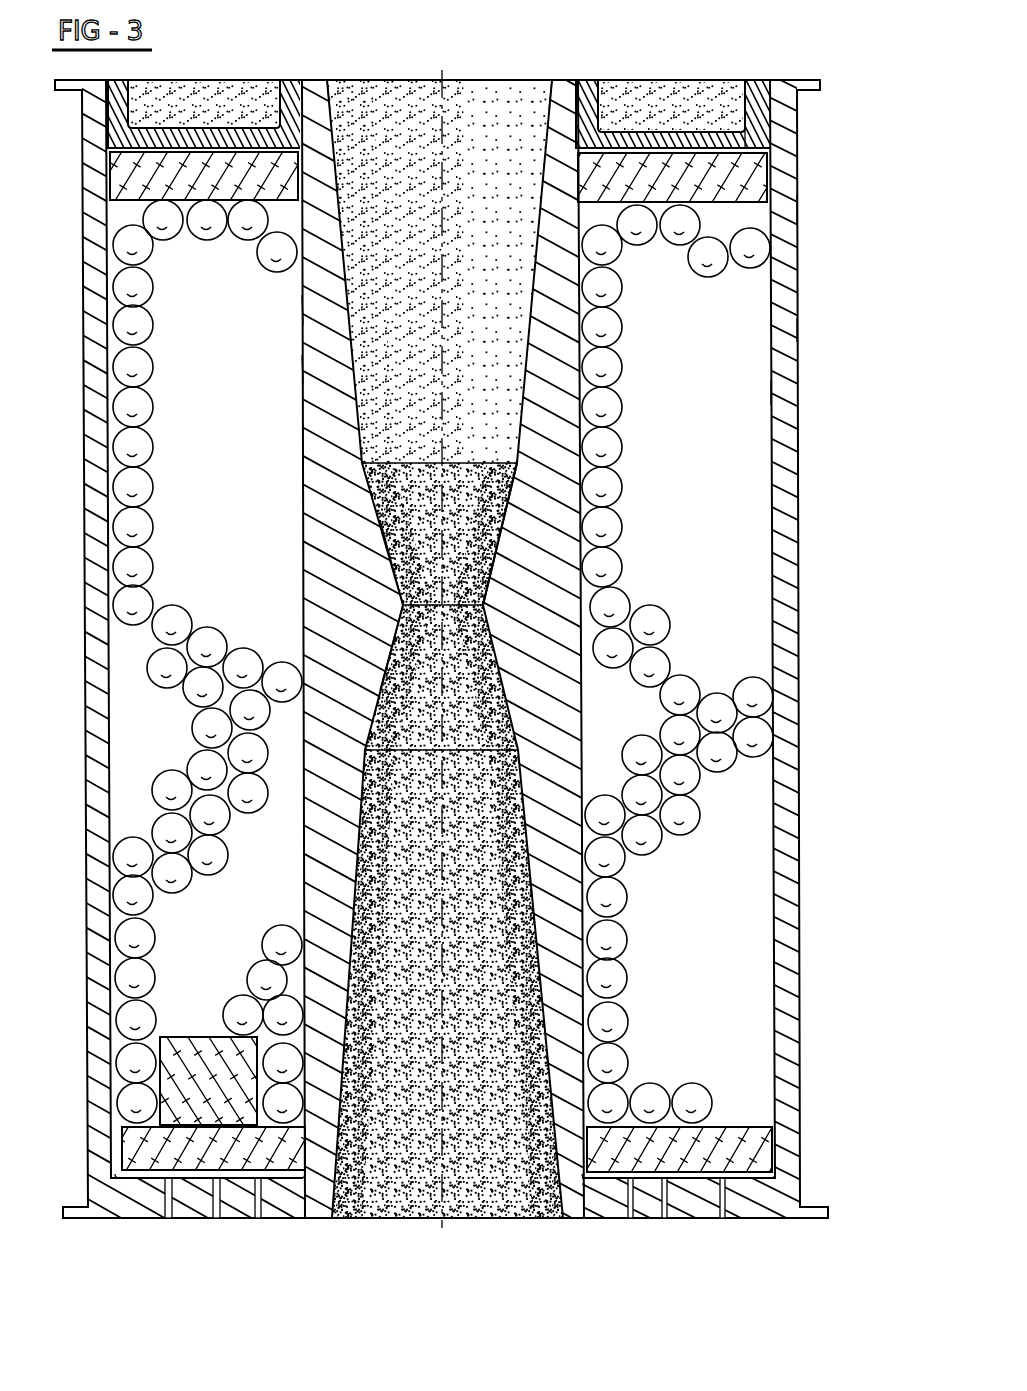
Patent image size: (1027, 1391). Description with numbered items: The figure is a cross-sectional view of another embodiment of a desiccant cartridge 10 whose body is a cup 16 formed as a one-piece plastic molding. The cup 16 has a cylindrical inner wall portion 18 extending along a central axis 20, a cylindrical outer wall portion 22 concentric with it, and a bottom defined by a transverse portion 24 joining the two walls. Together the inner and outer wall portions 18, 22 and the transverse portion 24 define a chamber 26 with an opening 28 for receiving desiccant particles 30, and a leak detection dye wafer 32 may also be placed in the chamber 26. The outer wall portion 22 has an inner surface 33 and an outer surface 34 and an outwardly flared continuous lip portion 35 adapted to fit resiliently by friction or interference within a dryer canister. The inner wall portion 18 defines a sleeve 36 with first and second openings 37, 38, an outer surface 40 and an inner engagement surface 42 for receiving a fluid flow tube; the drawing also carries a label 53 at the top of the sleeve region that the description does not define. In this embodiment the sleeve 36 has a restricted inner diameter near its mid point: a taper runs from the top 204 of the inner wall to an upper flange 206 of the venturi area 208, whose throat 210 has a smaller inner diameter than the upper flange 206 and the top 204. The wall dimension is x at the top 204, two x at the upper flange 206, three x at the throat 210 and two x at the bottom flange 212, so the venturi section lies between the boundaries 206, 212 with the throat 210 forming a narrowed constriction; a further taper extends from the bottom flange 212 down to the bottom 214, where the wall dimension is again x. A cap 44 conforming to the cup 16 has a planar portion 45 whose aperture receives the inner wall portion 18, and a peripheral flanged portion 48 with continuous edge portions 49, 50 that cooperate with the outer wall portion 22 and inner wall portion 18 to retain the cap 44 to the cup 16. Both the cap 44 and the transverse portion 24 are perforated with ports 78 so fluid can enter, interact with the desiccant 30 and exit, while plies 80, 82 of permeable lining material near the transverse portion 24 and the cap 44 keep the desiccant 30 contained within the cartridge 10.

The desiccant cartridge 10 is at (793, 60).
The cup 16 is at (87, 681).
The inner wall portion 18 is at (318, 447).
The central axis 20 is at (462, 247).
The outer wall portion 22 is at (782, 472).
The transverse portion 24 is at (185, 1107).
The chamber 26 is at (228, 590).
The opening 28 is at (234, 80).
The desiccant particles 30 is at (602, 405).
The wafer 32 is at (200, 1060).
The inner surface 33 is at (772, 395).
The outer surface 34 is at (785, 341).
The flared lip portion 35 is at (802, 92).
The sleeve 36 is at (502, 140).
The first opening 37 is at (346, 80).
The second opening 38 is at (371, 1229).
The outer surface 40 is at (302, 370).
The inner engagement surface 42 is at (309, 310).
The cap 44 is at (708, 118).
The planar portion 45 is at (205, 104).
The peripheral flanged portion 48 is at (114, 107).
The continuous edge portion 49 is at (772, 82).
The continuous edge portion 50 is at (586, 82).
The nozzle inner top edge 53 is at (535, 84).
The ports 78 is at (642, 120).
The ply 80 is at (725, 1120).
The ply 82 is at (792, 210).
The top 204 is at (311, 80).
The upper flange 206 is at (492, 455).
The venturi area 208 is at (548, 537).
The throat 210 is at (486, 605).
The bottom flange 212 is at (493, 752).
The bottom 214 is at (602, 1076).